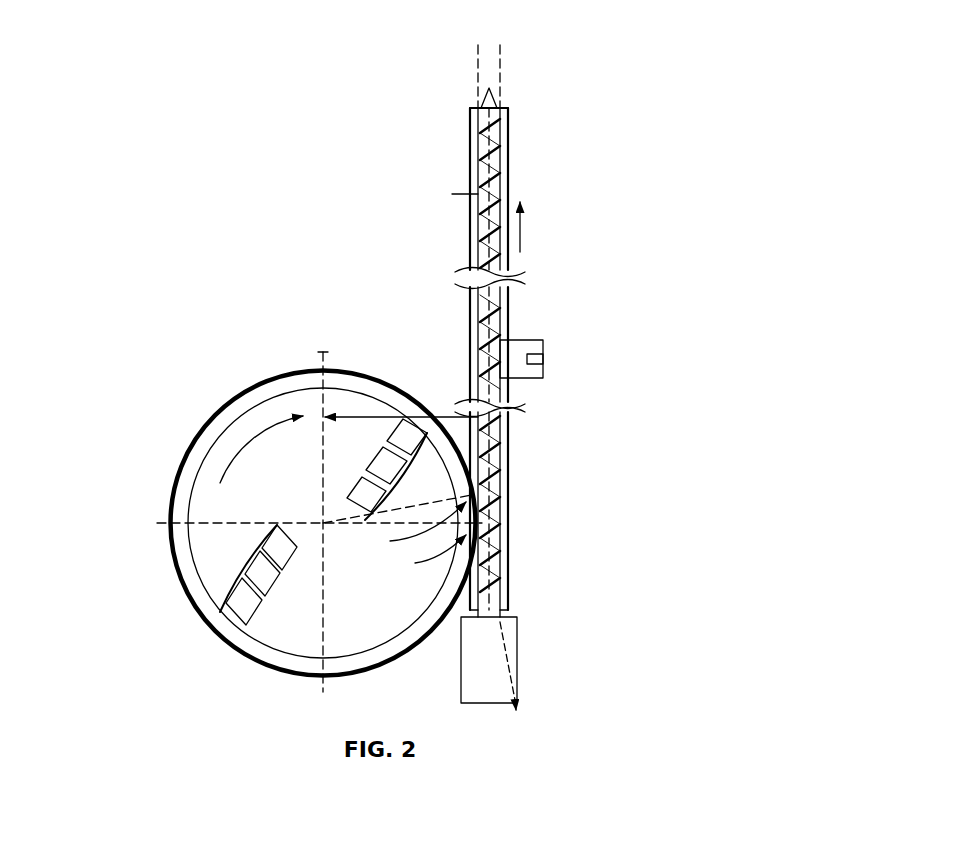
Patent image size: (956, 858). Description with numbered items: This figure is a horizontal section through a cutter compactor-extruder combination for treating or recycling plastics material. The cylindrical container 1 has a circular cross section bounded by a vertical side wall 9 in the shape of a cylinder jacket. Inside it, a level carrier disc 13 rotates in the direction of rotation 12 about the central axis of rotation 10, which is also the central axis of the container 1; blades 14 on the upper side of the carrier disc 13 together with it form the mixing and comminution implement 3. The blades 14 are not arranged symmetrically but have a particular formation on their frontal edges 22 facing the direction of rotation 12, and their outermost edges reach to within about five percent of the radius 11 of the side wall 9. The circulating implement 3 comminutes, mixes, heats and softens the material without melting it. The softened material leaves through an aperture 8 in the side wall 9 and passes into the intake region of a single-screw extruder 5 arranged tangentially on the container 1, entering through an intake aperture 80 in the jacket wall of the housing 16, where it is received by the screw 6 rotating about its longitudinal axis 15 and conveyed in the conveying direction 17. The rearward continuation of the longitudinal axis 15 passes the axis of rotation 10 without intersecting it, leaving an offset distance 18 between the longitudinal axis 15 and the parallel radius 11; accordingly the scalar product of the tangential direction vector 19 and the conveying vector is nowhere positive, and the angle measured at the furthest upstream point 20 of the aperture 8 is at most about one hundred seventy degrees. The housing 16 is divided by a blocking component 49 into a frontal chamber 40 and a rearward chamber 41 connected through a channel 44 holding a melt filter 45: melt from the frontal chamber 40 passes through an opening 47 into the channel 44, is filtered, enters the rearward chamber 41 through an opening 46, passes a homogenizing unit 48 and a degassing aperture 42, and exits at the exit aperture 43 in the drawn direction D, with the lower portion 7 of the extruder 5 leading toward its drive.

The container 1 is at (128, 343).
The mixing and comminution implement 3 is at (208, 554).
The extruder 5 is at (444, 263).
The screw 6 is at (494, 193).
The lower tube portion 7 is at (491, 586).
The aperture 8 is at (432, 554).
The side wall 9 is at (170, 493).
The axis of rotation 10 is at (326, 525).
The radius 11 is at (321, 351).
The direction of rotation 12 is at (250, 443).
The carrier disc 13 is at (345, 390).
The blades 14 is at (252, 578).
The longitudinal axis 15 is at (488, 177).
The housing 16 is at (502, 292).
The conveying direction 17 is at (522, 222).
The offset distance 18 is at (372, 423).
The direction vector 19 is at (512, 635).
The point 20 is at (413, 494).
The frontal edges 22 is at (276, 523).
The frontal chamber 40 is at (560, 487).
The rearward chamber 41 is at (540, 267).
The degassing aperture 42 is at (450, 193).
The exit aperture 43 is at (468, 99).
The channel 44 is at (541, 373).
The melt filter 45 is at (543, 356).
The opening 46 is at (507, 340).
The opening 47 is at (503, 376).
The homogenizing unit 48 is at (476, 238).
The blocking component 49 is at (476, 328).
The intake aperture 80 is at (502, 522).
The direction D is at (489, 64).